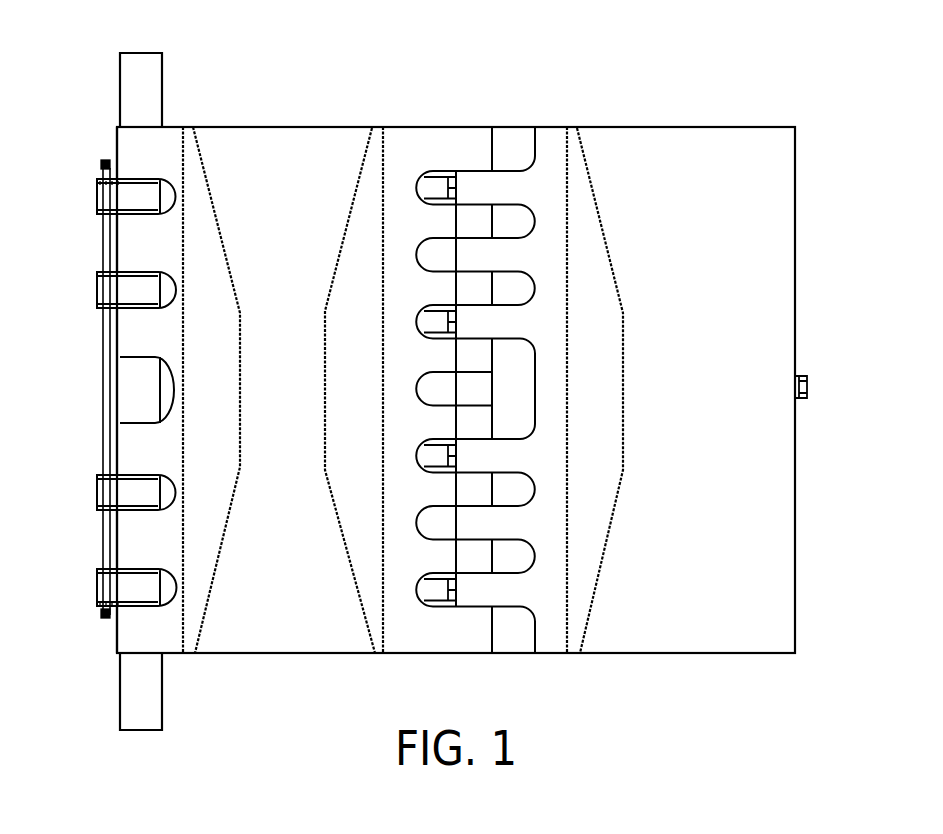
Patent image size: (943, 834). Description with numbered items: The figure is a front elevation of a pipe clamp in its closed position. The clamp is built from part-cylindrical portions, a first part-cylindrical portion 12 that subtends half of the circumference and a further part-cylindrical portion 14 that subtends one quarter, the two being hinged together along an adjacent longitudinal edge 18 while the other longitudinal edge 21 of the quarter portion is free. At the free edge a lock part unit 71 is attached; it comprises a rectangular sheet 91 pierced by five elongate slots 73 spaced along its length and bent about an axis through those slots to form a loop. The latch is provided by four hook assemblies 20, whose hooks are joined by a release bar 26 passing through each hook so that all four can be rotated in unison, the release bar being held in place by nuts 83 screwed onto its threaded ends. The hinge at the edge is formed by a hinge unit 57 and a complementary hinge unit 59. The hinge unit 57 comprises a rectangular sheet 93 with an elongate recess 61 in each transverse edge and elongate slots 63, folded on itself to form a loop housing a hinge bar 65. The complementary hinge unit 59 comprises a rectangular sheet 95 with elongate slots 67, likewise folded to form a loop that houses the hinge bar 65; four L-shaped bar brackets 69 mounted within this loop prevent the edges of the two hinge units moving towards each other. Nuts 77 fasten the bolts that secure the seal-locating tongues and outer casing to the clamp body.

The first part-cylindrical portion 12 is at (745, 655).
The part-cylindrical portion 14 is at (305, 655).
The longitudinal edge 18 is at (466, 127).
The hook assembly 20 is at (98, 202).
The free longitudinal edge 21 is at (115, 148).
The release bar 26 is at (98, 392).
The hinge unit 57 is at (558, 655).
The complementary hinge unit 59 is at (440, 655).
The elongate recess 61 is at (520, 127).
The elongate slot 63 is at (532, 223).
The hinge bar 65 is at (492, 393).
The elongate slot 67 is at (426, 190).
The bar bracket 69 is at (458, 192).
The lock part unit 71 is at (167, 127).
The elongate slot 73 is at (176, 197).
The nut 77 is at (808, 388).
The nut 83 is at (98, 178).
The rectangular sheet 91 is at (177, 654).
The rectangular sheet 93 is at (558, 127).
The rectangular sheet 95 is at (410, 127).